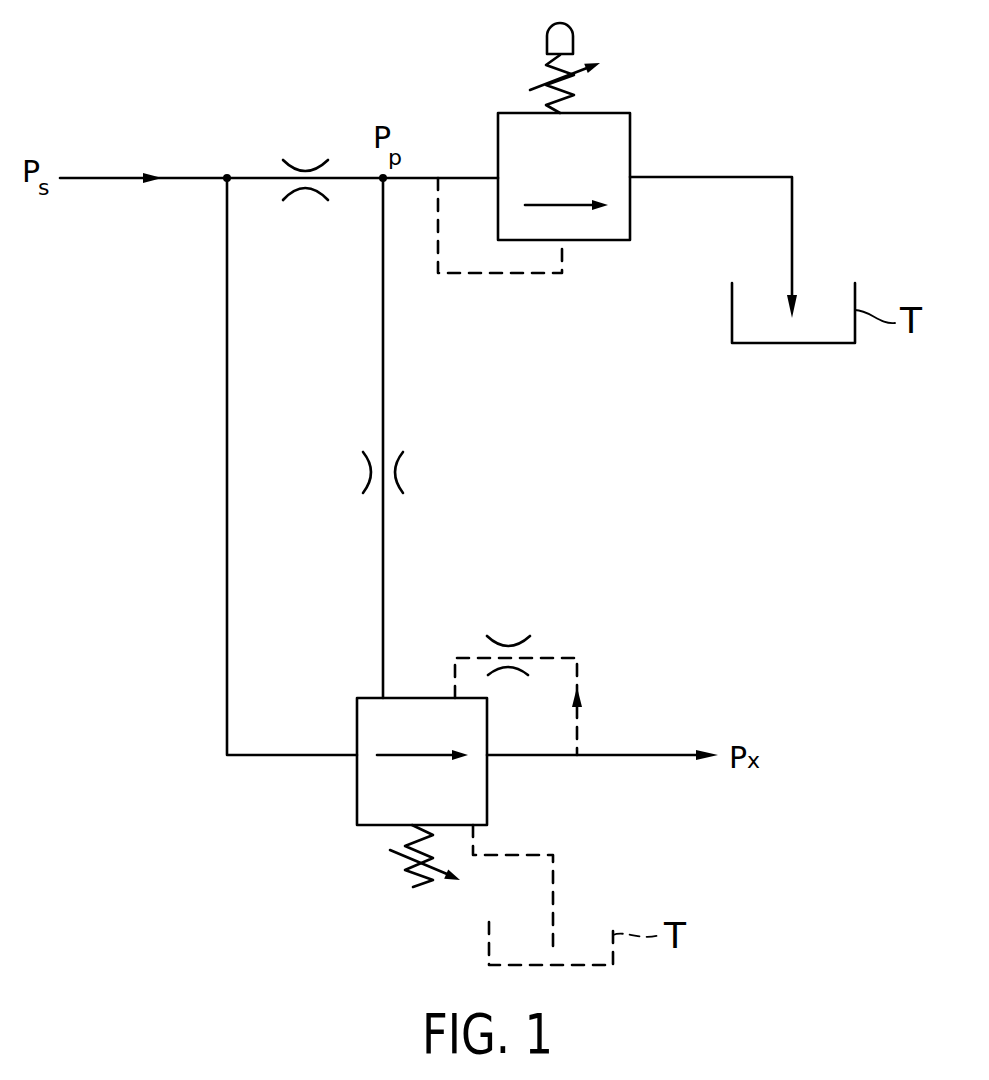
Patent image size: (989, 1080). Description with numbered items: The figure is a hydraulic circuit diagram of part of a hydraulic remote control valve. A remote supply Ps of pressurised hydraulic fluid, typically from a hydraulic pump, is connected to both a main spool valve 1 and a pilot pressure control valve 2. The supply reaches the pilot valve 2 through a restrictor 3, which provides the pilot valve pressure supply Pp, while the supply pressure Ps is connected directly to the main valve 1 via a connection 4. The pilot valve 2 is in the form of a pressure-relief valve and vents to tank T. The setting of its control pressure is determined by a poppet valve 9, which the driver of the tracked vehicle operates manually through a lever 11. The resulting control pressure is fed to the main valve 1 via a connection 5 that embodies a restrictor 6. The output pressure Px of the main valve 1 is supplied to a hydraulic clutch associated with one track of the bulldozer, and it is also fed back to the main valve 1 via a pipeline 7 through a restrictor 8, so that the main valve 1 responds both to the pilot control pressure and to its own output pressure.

The main spool valve 1 is at (357, 812).
The pilot pressure control valve 2 is at (630, 228).
The restrictor 3 is at (315, 198).
The connection 4 is at (227, 442).
The connection 5 is at (384, 382).
The restrictor 6 is at (401, 487).
The pipeline 7 is at (579, 717).
The restrictor 8 is at (522, 640).
The poppet valve 9 is at (607, 90).
The lever 11 is at (547, 30).